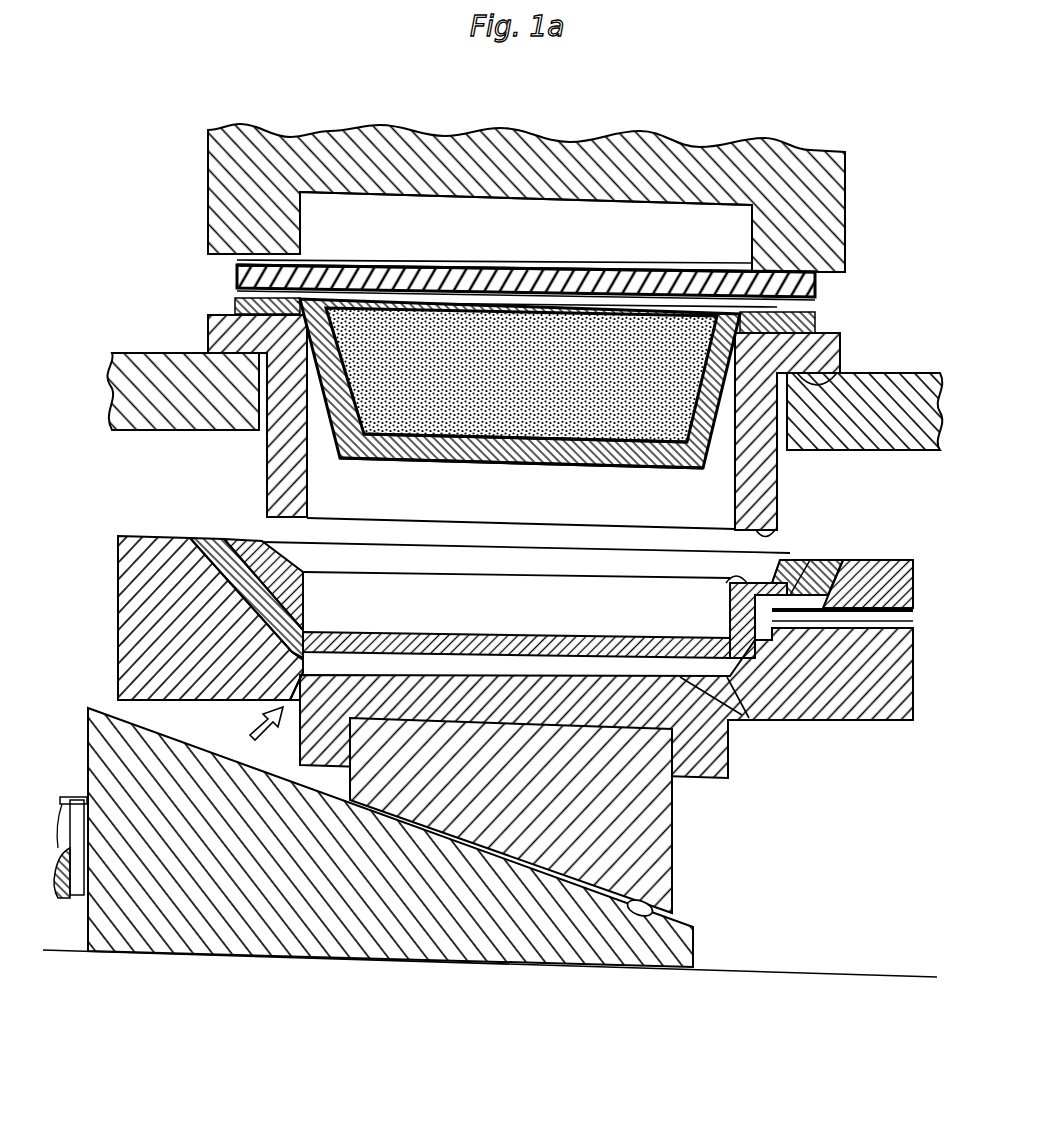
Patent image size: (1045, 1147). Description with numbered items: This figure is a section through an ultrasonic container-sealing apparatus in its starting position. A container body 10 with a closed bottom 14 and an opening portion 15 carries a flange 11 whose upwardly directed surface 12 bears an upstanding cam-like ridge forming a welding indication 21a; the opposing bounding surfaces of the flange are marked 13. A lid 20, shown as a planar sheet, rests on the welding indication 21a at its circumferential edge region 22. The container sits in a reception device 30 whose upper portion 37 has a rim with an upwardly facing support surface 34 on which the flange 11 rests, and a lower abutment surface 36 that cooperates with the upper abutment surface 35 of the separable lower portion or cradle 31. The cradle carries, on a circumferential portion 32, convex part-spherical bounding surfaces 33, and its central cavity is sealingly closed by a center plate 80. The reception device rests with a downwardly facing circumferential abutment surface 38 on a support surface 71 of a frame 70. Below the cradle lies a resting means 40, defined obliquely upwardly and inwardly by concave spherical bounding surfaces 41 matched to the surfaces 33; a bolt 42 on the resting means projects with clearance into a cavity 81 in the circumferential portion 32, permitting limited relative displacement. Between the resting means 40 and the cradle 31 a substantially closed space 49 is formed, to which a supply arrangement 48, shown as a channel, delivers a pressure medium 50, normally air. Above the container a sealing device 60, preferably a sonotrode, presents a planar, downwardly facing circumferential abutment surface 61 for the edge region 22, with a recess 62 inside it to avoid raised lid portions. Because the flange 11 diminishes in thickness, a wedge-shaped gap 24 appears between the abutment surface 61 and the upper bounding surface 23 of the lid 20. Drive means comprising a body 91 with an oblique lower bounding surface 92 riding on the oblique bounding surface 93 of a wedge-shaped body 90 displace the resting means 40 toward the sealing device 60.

The container body 10 is at (390, 460).
The flange 11 is at (235, 306).
The upwardly directed surface 12 is at (243, 291).
The bounding surfaces of the flange 13 is at (210, 338).
The closed bottom 14 is at (583, 472).
The opening portion 15 is at (380, 302).
The lid 20 is at (583, 272).
The welding indication 21a is at (780, 302).
The circumferential edge region 22 is at (760, 262).
The upper bounding surface 23 is at (347, 266).
The wedge-shaped gap 24 is at (237, 261).
The reception device 30 is at (813, 357).
The lower portion 31 is at (227, 555).
The circumferential portion 32 is at (277, 595).
The spherical bounding surfaces 33 is at (230, 617).
The support surface 34 is at (816, 326).
The upper abutment surface 35 is at (728, 584).
The lower abutment surface 36 is at (785, 534).
The upper portion 37 is at (283, 475).
The circumferential abutment surface 38 is at (792, 448).
The resting means 40 is at (857, 690).
The spherical bounding surfaces 41 is at (747, 714).
The bolt 42 is at (867, 608).
The supply arrangement 48 is at (282, 705).
The closed space 49 is at (732, 750).
The pressure medium 50 is at (251, 730).
The sealing device 60 is at (828, 240).
The abutment surface 61 is at (207, 253).
The recess 62 is at (558, 222).
The frame 70 is at (890, 433).
The support surface 71 is at (822, 388).
The center plate 80 is at (420, 640).
The cavity 81 is at (790, 560).
The wedge-shaped body 90 is at (260, 930).
The body 91 is at (647, 840).
The lower bounding surface 92 is at (670, 893).
The oblique bounding surface 93 is at (289, 771).